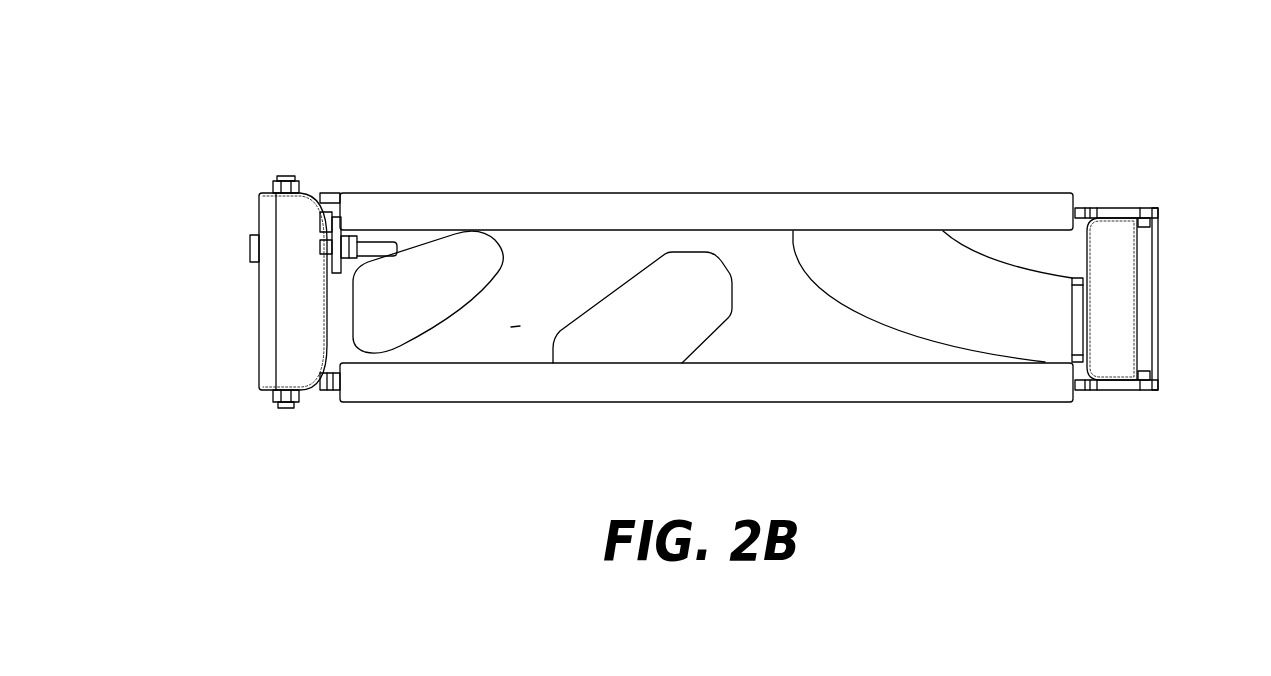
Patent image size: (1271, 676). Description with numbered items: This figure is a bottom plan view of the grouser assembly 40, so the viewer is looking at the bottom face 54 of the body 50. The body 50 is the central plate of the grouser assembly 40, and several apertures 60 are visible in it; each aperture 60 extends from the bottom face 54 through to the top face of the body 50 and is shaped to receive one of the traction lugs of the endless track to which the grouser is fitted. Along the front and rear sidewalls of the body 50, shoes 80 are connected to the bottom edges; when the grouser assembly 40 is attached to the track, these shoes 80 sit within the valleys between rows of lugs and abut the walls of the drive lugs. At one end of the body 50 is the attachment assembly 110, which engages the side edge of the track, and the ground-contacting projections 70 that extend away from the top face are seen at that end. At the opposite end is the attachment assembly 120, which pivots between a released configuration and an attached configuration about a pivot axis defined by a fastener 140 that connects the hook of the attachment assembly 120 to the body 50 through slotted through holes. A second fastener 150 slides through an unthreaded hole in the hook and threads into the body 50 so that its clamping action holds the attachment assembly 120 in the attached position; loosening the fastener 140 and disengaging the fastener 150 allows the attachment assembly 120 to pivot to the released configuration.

The grouser assembly 40 is at (367, 95).
The body 50 is at (552, 253).
The bottom face 54 is at (515, 330).
The apertures 60 is at (372, 325).
The ground-contacting projections 70 is at (1074, 313).
The shoes 80 is at (437, 200).
The attachment assembly 110 is at (1152, 296).
The attachment assembly 120 is at (260, 298).
The fastener 140 is at (283, 414).
The fastener 150 is at (376, 248).